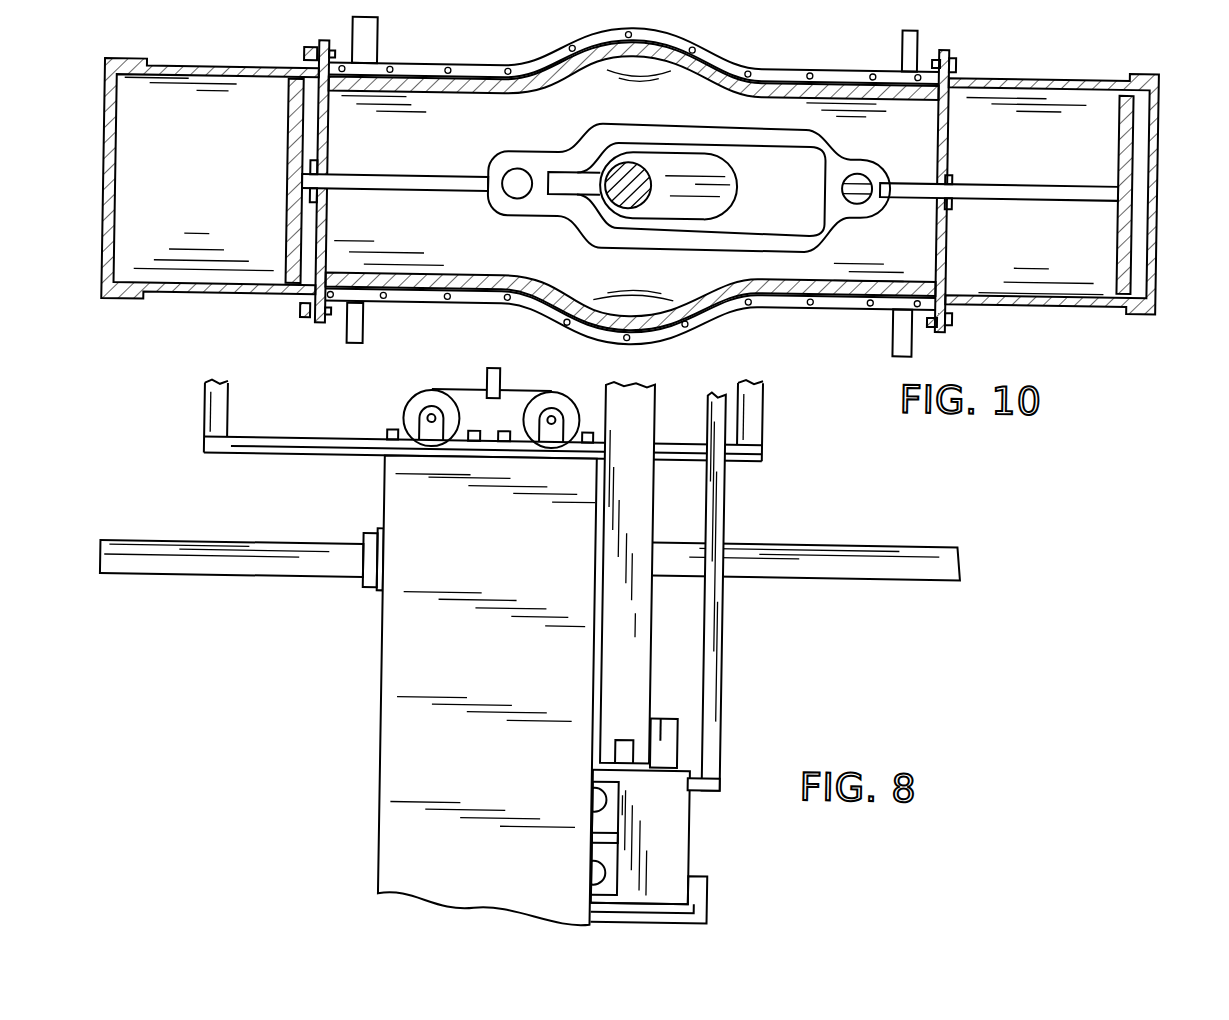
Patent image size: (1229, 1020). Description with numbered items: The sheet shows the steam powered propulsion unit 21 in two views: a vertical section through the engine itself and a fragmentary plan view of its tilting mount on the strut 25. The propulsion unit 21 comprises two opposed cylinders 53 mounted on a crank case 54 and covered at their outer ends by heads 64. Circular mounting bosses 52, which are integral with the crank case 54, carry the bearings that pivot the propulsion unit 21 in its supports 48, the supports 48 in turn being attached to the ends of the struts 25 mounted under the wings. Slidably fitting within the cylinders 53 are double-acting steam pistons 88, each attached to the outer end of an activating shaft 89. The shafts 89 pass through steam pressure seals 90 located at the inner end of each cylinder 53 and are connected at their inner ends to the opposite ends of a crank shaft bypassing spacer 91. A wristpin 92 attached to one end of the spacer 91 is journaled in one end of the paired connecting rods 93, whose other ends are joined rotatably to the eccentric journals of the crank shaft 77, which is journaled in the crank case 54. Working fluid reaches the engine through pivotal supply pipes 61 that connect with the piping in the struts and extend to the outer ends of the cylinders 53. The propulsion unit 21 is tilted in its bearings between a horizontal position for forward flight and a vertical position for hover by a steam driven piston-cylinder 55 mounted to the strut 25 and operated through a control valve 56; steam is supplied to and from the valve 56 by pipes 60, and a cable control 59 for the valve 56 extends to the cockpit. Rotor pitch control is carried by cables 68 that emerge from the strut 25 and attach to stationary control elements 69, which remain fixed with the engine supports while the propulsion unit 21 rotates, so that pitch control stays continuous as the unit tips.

In FIG. 10, the propulsion unit 21 is at (257, 309).
In FIG. 10, the circular mounting boss 52 is at (356, 44).
In FIG. 10, the cylinder 53 is at (183, 74).
In FIG. 10, the crank case 54 is at (804, 282).
In FIG. 10, the head 64 is at (100, 193).
In FIG. 10, the crank shaft 77 is at (650, 169).
In FIG. 10, the double-acting steam piston 88 is at (289, 123).
In FIG. 10, the activating shaft 89 is at (425, 183).
In FIG. 10, the steam pressure seal 90 is at (315, 168).
In FIG. 10, the crank shaft bypassing spacer 91 is at (824, 149).
In FIG. 10, the wristpin 92 is at (510, 184).
In FIG. 10, the connecting rod 93 is at (583, 180).
In FIG. 8, the strut 25 is at (396, 709).
In FIG. 8, the support 48 is at (216, 418).
In FIG. 8, the piston-cylinder 55 is at (637, 643).
In FIG. 8, the control valve 56 is at (675, 826).
In FIG. 8, the cable control 59 is at (608, 812).
In FIG. 8, the pipe 60 is at (717, 638).
In FIG. 8, the pivotal supply pipe 61 is at (279, 568).
In FIG. 8, the cable 68 is at (520, 393).
In FIG. 8, the stationary control element 69 is at (495, 374).